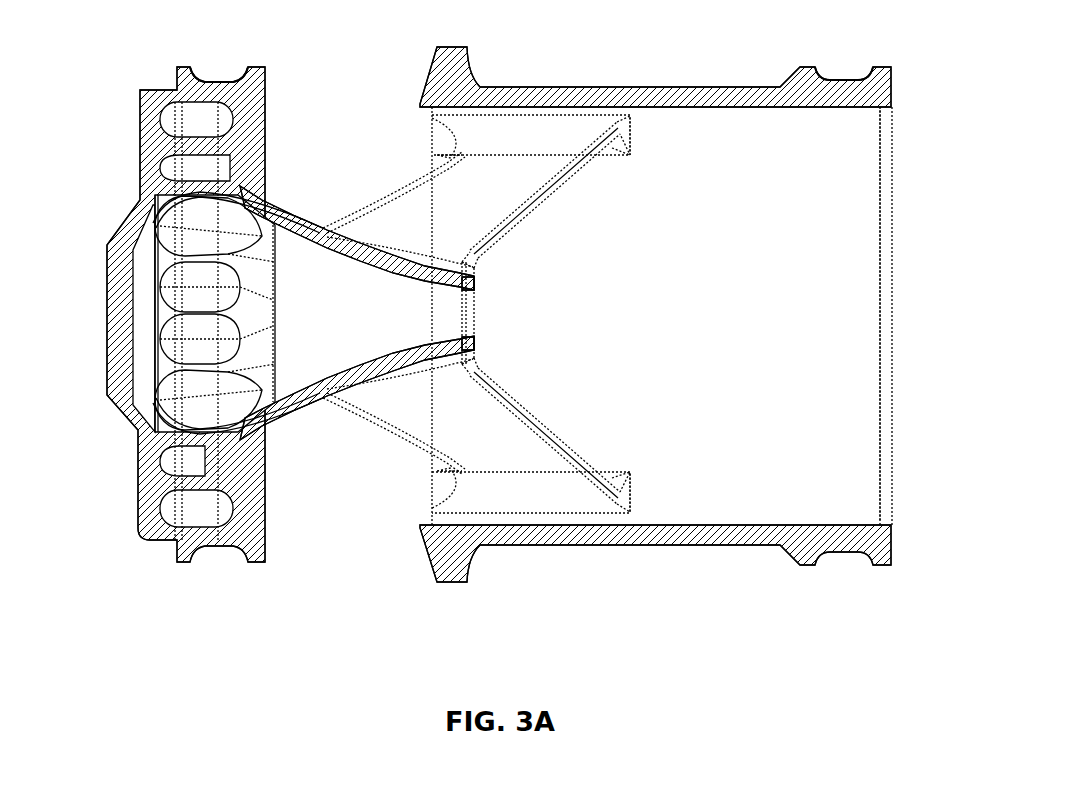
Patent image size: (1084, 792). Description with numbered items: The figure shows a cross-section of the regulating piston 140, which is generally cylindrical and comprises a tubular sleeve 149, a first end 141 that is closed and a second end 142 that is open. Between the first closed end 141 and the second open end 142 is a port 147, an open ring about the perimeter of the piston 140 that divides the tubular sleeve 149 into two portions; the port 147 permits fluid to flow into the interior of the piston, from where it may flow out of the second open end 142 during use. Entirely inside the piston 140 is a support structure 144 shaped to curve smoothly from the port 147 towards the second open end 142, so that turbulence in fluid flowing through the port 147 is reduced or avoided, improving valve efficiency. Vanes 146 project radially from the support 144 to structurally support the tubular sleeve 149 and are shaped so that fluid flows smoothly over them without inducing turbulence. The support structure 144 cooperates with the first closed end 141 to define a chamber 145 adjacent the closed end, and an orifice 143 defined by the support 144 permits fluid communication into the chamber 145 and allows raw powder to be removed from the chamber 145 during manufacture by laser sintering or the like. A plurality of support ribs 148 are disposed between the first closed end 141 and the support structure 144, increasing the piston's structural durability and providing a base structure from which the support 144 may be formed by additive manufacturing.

The regulating piston 140 is at (484, 80).
The first end 141 is at (130, 398).
The second end 142 is at (868, 292).
The orifice 143 is at (462, 315).
The support structure 144 is at (322, 235).
The chamber 145 is at (357, 334).
The vanes 146 is at (512, 440).
The port 147 is at (318, 545).
The support ribs 148 is at (190, 315).
The tubular sleeve 149 is at (697, 95).